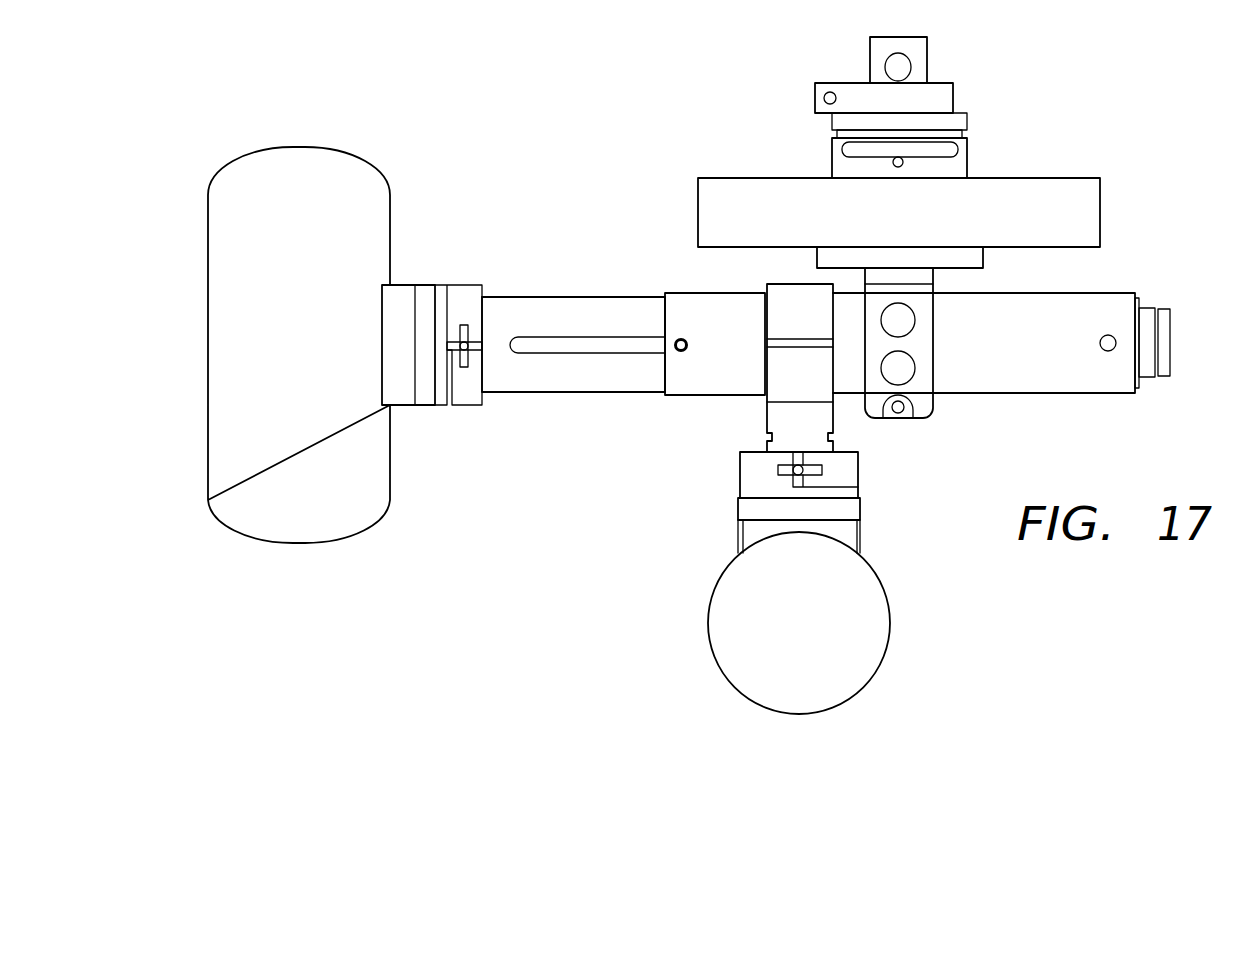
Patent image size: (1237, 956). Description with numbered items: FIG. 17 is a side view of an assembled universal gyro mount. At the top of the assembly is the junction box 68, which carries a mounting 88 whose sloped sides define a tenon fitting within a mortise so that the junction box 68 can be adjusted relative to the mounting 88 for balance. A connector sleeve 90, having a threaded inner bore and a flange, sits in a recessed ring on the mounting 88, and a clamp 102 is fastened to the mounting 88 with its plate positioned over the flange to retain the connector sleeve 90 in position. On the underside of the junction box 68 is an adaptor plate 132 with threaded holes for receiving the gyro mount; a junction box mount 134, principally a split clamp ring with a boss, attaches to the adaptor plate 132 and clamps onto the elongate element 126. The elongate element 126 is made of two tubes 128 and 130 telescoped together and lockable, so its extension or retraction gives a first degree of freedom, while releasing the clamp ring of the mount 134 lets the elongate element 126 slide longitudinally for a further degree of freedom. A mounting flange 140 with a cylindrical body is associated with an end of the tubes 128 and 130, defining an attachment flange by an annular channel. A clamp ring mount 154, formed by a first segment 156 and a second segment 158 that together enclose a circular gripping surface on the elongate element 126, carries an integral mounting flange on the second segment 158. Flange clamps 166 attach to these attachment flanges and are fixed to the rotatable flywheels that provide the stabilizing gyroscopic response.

The junction box 68 is at (1100, 197).
The mounting 88 is at (967, 160).
The connector sleeve 90 is at (927, 58).
The clamp 102 is at (967, 118).
The elongate element 126 is at (525, 288).
The tube 128 is at (595, 297).
The tube 130 is at (692, 293).
The adaptor plate 132 is at (983, 257).
The junction box mount 134 is at (933, 328).
The mounting flange 140 is at (1158, 288).
The clamp ring mount 154 is at (750, 426).
The first segment 156 is at (767, 313).
The second segment 158 is at (767, 368).
The flange clamp 166 is at (467, 273).